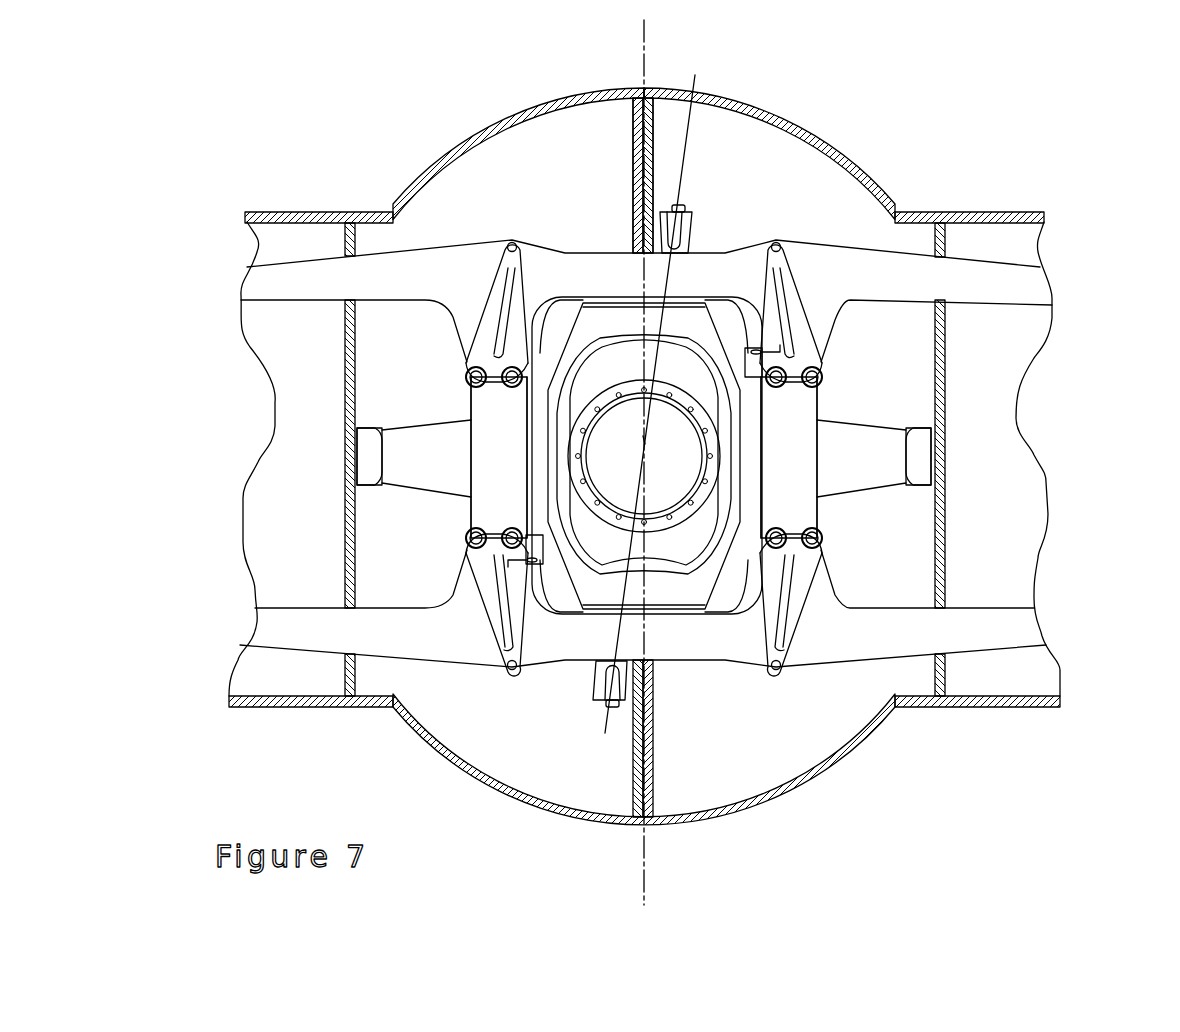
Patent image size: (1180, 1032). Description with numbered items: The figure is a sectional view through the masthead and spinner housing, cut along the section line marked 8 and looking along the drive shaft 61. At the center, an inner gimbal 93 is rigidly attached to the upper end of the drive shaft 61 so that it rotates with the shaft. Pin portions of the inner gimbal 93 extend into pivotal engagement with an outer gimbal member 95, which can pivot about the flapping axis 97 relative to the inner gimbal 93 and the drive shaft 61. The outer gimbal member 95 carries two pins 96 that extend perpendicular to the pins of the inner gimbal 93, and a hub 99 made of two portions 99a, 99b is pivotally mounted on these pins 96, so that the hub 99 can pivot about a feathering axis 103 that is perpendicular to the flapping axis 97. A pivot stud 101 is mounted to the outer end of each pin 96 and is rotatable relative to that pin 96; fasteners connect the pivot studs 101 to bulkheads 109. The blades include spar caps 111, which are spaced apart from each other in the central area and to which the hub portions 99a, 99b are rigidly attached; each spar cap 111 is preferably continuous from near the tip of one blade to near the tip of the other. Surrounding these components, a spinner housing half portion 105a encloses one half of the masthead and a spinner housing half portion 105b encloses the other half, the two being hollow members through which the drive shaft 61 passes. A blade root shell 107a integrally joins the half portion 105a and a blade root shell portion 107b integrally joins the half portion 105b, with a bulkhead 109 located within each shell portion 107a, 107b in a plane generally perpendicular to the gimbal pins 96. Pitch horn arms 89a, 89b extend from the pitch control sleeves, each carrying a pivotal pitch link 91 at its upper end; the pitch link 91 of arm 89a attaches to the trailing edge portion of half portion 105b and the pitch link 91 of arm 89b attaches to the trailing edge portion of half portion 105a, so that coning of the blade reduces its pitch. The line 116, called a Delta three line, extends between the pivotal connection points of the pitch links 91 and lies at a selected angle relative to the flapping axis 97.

The section line 8- 8 is at (227, 403).
The drive shaft 61 is at (682, 513).
The pitch horn arm 89a is at (592, 699).
The pitch horn arm 89b is at (697, 237).
The pitch link 91 is at (683, 207).
The inner gimbal 93 is at (747, 353).
The outer gimbal member 95 is at (677, 357).
The pins 96 is at (392, 437).
The flapping axis 97 is at (633, 277).
The hub 99 is at (557, 272).
The hub portion 99a is at (483, 413).
The hub portion 99b is at (808, 407).
The pivot stud 101 is at (920, 470).
The feathering axis 103 is at (847, 460).
The spinner housing half portion 105a is at (450, 143).
The spinner housing half portion 105b is at (815, 135).
The blade root shell 107a is at (252, 215).
The blade root shell portion 107b is at (960, 207).
The bulkhead 109 is at (947, 570).
The spar caps 111 is at (297, 268).
The Delta 3 line 116 is at (683, 205).